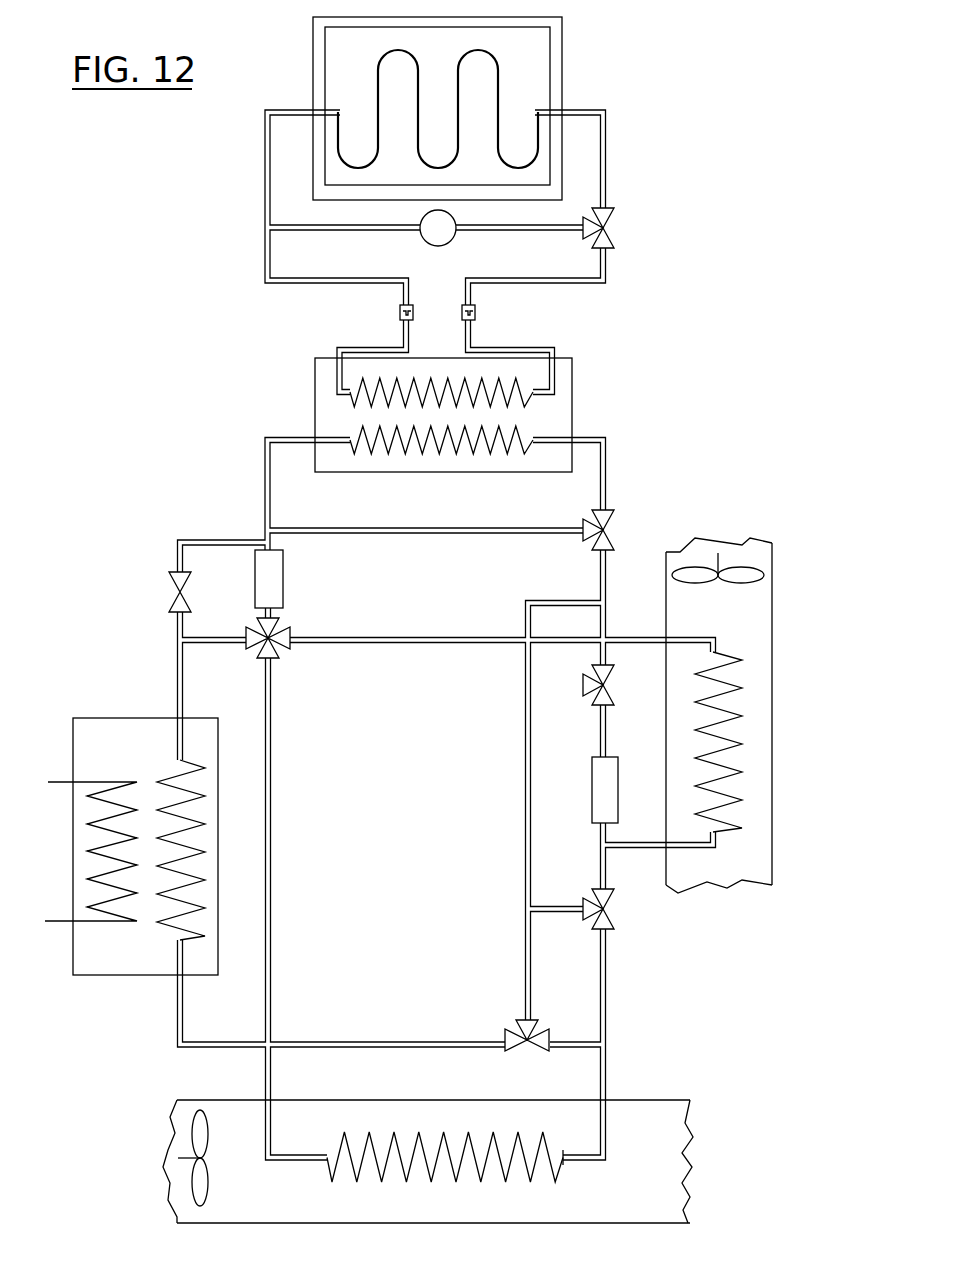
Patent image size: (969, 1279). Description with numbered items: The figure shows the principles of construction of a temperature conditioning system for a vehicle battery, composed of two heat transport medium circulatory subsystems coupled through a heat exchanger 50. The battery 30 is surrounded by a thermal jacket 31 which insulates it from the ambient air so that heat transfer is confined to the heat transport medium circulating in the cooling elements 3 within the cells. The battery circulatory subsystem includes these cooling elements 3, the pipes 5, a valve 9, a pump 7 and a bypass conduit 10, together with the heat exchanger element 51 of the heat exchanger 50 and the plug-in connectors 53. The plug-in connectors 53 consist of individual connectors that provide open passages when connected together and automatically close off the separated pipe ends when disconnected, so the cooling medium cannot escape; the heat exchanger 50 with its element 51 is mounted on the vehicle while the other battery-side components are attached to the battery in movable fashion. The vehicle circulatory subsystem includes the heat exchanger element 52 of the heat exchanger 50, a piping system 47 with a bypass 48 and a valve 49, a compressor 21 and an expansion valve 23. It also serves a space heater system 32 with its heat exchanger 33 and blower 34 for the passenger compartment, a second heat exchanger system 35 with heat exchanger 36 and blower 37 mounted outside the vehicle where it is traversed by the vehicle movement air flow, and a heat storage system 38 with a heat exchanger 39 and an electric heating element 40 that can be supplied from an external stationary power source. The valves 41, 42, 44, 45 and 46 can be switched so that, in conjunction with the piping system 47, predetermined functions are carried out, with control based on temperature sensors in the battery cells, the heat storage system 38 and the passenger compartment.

The cooling elements 3 is at (358, 172).
The pipes 5 is at (266, 186).
The pump 7 is at (456, 222).
The valve 9 is at (608, 236).
The bypass conduit 10 is at (308, 228).
The compressor 21 is at (255, 596).
The expansion valve 23 is at (592, 811).
The battery 30 is at (407, 160).
The thermal jacket 31 is at (545, 193).
The space heater system 32 is at (412, 1118).
The heat exchanger 33 is at (563, 1153).
The blower 34 is at (205, 1113).
The second heat exchanger system 35 is at (765, 880).
The heat exchanger 36 is at (728, 826).
The blower 37 is at (765, 573).
The heat storage system 38 is at (113, 960).
The heat exchanger 39 is at (197, 935).
The electric heating element 40 is at (58, 782).
The valve 41 is at (273, 657).
The valve 42 is at (610, 921).
The valve 44 is at (610, 702).
The valve 45 is at (503, 1033).
The valve 46 is at (175, 608).
The piping system 47 is at (508, 605).
The bypass 48 is at (440, 533).
The valve 49 is at (610, 537).
The heat exchanger 50 is at (330, 408).
The heat exchanger element 51 is at (533, 378).
The heat exchanger element 52 is at (520, 430).
The plug-in connectors 53 is at (398, 317).